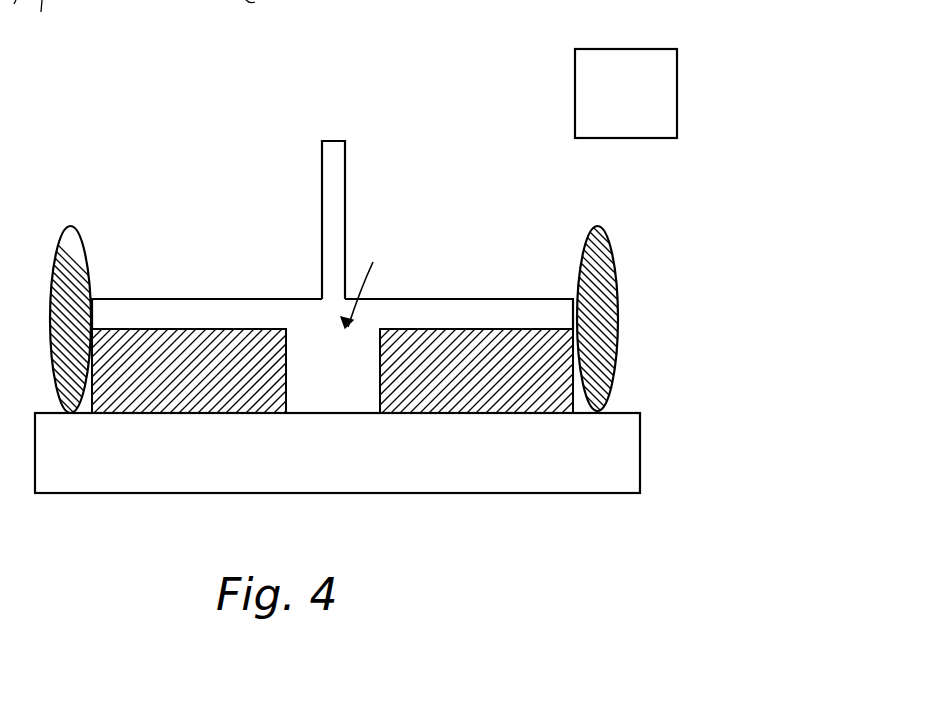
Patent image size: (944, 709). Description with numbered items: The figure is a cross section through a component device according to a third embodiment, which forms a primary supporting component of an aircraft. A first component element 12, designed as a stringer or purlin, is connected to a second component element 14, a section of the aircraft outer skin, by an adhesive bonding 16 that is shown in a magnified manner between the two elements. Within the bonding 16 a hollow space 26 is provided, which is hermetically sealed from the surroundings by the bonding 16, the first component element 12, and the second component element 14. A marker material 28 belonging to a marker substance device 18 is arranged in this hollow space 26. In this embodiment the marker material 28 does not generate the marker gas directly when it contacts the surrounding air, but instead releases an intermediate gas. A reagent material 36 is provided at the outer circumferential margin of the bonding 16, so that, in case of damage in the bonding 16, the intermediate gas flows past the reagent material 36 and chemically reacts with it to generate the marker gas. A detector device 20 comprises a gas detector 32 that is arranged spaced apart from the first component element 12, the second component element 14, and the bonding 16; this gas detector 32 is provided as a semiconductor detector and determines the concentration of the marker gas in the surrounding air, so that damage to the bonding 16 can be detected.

The first component element 12 is at (198, 310).
The second component element 14 is at (598, 476).
The bonding 16 is at (447, 392).
The marker substance device 18 is at (378, 275).
The detector device 20 is at (572, 66).
The hollow space 26 is at (333, 371).
The marker material 28 is at (367, 340).
The gas detector 32 is at (612, 68).
The reagent material 36 is at (70, 228).